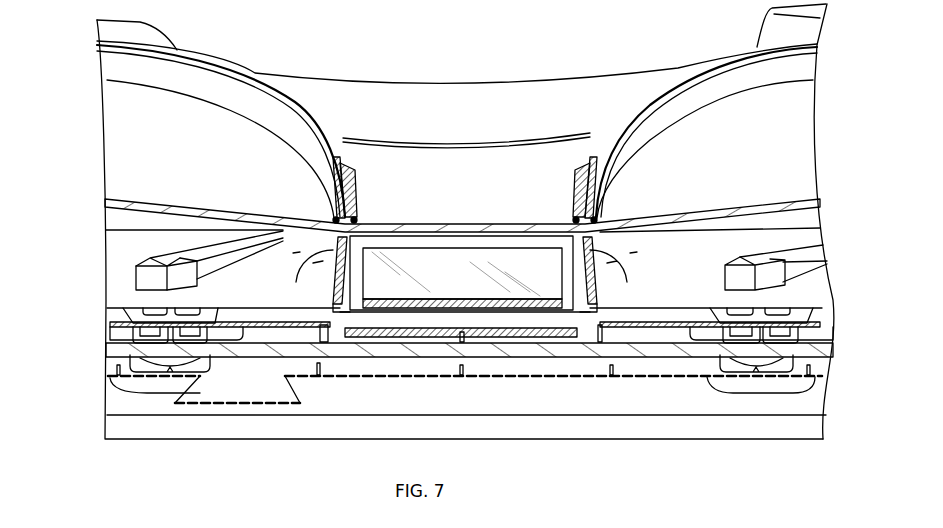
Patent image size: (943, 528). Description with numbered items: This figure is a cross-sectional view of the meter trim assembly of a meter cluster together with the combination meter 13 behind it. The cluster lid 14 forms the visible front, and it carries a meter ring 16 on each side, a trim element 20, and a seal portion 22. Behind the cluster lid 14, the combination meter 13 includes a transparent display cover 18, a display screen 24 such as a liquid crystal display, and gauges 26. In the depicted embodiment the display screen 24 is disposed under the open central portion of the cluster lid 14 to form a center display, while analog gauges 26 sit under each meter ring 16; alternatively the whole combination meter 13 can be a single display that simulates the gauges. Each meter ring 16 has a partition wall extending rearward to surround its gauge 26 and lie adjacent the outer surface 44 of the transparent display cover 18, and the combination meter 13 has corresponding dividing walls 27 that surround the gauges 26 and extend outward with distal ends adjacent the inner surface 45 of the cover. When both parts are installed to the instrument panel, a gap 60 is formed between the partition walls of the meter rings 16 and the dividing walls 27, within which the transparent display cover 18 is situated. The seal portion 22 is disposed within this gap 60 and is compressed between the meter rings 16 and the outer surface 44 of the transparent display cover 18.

The combination meter 13 is at (118, 282).
The cluster lid 14 is at (446, 78).
The meter ring 16 is at (198, 80).
The transparent display cover 18 is at (667, 210).
The trim element 20 is at (333, 127).
The seal portion 22 is at (360, 220).
The display screen 24 is at (445, 267).
The gauges 26 is at (177, 233).
The dividing walls 27 is at (338, 285).
The outer surface 44 is at (133, 200).
The inner surface 45 is at (148, 216).
The gap 60 is at (322, 240).